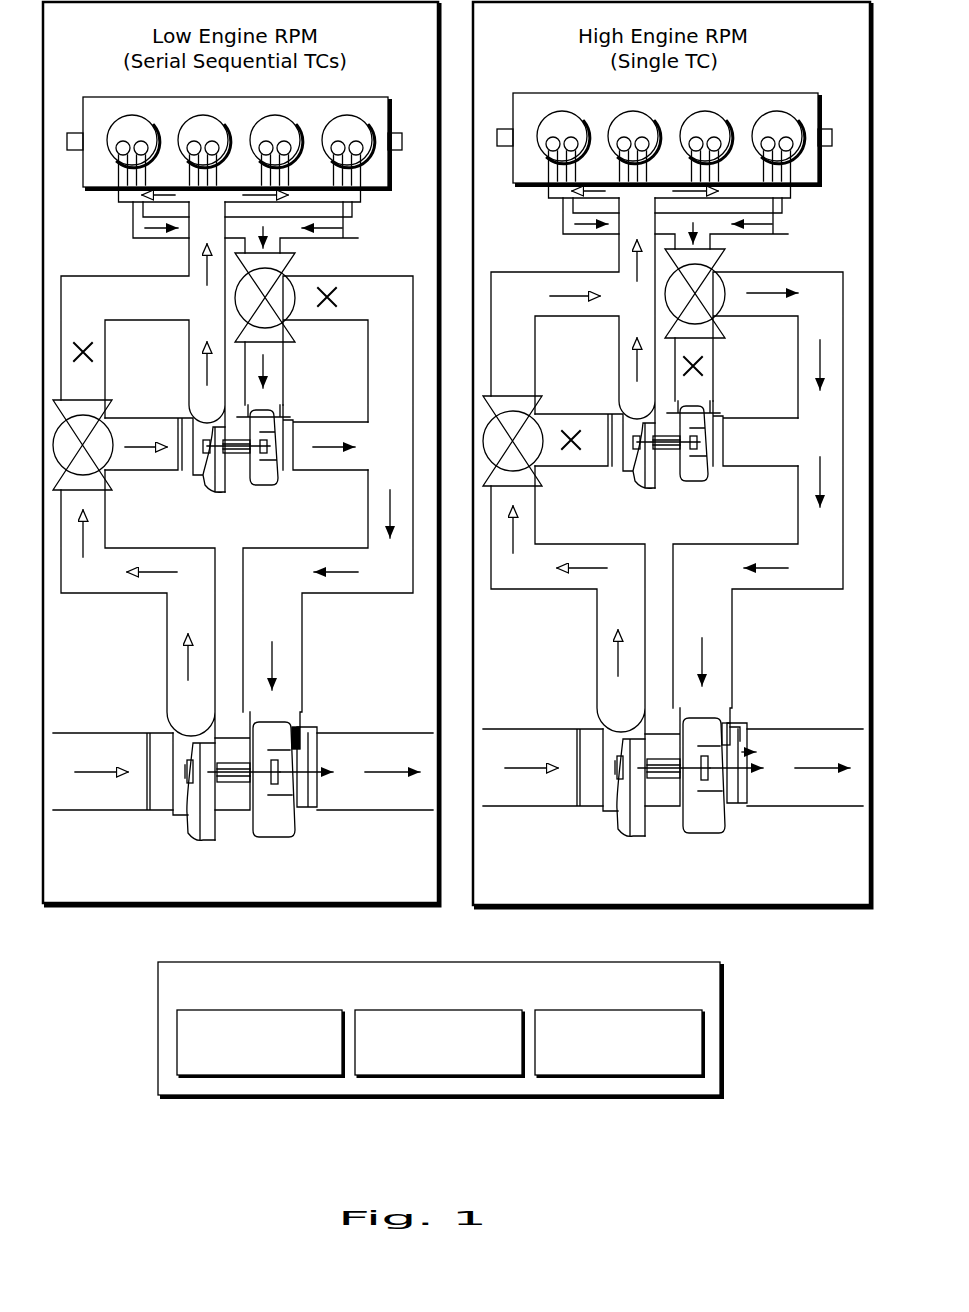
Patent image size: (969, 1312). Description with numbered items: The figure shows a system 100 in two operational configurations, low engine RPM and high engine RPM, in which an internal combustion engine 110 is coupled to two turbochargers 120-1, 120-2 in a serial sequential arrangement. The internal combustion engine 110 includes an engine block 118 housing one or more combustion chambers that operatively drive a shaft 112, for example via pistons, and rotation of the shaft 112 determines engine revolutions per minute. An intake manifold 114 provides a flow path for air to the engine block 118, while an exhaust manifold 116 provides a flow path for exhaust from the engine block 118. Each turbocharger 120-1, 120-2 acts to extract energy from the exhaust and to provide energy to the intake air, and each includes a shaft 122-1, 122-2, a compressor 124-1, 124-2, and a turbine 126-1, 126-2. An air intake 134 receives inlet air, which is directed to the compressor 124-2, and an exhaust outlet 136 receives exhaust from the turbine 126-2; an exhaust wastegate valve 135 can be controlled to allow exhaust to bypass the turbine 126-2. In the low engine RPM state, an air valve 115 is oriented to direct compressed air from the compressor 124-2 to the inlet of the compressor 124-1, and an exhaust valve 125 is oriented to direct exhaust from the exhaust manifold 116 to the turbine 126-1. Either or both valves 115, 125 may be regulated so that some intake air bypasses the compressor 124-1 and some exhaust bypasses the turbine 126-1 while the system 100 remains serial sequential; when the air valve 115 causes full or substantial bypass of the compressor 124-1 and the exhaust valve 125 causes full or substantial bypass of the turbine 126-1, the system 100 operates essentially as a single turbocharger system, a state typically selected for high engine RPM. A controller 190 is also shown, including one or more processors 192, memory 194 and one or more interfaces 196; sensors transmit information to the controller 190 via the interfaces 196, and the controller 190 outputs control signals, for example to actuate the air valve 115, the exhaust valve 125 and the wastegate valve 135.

The system 100 is at (92, 30).
The internal combustion engine 110 is at (358, 97).
The shaft 112 is at (67, 133).
The intake manifold 114 is at (118, 203).
The exhaust manifold 116 is at (358, 238).
The engine block 118 is at (257, 121).
The air valve 115 is at (112, 400).
The exhaust valve 125 is at (285, 342).
The turbocharger 120-1 is at (236, 442).
The shaft 122-1 is at (232, 453).
The compressor 124-1 is at (207, 480).
The turbine 126-1 is at (302, 421).
The turbocharger 120-2 is at (242, 786).
The shaft 122-2 is at (232, 782).
The compressor 124-2 is at (188, 833).
The turbine 126-2 is at (292, 832).
The air intake 134 is at (122, 733).
The exhaust wastegate valve 135 is at (297, 728).
The exhaust outlet 136 is at (361, 733).
The controller 190 is at (503, 995).
The processors 192 is at (241, 1068).
The memory 194 is at (419, 1068).
The interfaces 196 is at (637, 1068).